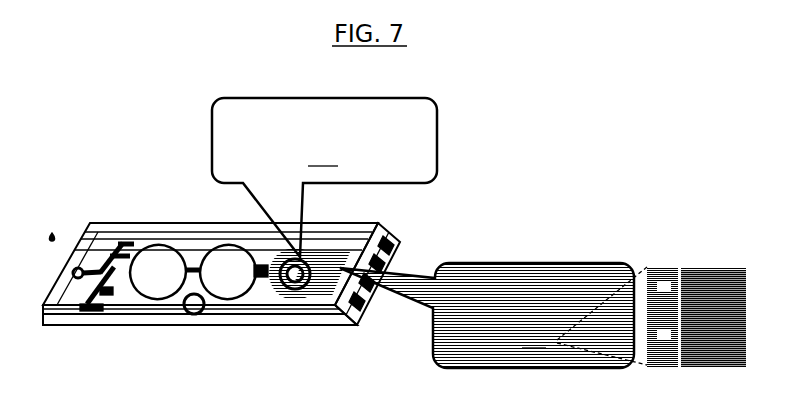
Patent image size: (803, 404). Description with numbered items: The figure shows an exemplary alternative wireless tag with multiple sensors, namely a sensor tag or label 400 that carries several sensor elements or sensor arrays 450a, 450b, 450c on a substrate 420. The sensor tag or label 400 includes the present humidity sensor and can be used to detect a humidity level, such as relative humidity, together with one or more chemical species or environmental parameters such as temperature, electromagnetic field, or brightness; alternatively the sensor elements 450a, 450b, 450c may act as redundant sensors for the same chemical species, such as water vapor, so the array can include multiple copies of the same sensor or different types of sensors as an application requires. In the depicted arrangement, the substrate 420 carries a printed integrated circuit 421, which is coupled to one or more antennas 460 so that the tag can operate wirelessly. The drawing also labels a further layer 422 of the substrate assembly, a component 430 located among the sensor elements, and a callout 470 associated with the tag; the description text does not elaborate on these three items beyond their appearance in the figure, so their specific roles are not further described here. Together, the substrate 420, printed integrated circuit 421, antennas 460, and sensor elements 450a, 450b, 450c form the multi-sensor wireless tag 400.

The sensor tag or label 400 is at (139, 125).
The substrate 420 is at (110, 327).
The printed integrated circuit 421 is at (543, 315).
The circuit layer 422 is at (325, 308).
The sensor element 430 is at (287, 282).
The sensor element 450a is at (178, 265).
The sensor element 450b is at (225, 265).
The sensor element 450c is at (333, 263).
The antenna 460 is at (387, 242).
The detection protocols 470 is at (324, 177).